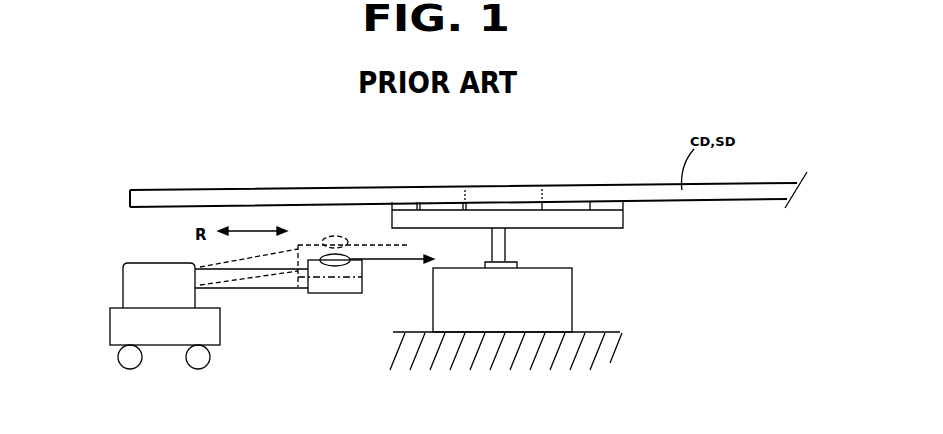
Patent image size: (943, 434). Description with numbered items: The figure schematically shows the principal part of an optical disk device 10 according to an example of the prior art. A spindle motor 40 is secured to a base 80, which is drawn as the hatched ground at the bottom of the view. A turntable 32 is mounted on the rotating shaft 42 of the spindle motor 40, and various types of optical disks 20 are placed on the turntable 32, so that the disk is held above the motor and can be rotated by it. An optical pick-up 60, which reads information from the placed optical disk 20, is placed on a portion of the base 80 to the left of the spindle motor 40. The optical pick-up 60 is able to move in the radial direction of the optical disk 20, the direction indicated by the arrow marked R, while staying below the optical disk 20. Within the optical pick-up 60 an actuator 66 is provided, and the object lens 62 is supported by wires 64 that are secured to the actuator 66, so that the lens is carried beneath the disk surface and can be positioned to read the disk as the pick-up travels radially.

The optical disk device 10 is at (142, 188).
The optical disk 20 is at (742, 194).
The turntable 32 is at (613, 221).
The spindle motor 40 is at (572, 303).
The rotating shaft 42 is at (503, 246).
The optical pick-up 60 is at (105, 336).
The object lens 62 is at (335, 293).
The wires 64 is at (272, 289).
The actuator 66 is at (130, 283).
The base 80 is at (410, 332).